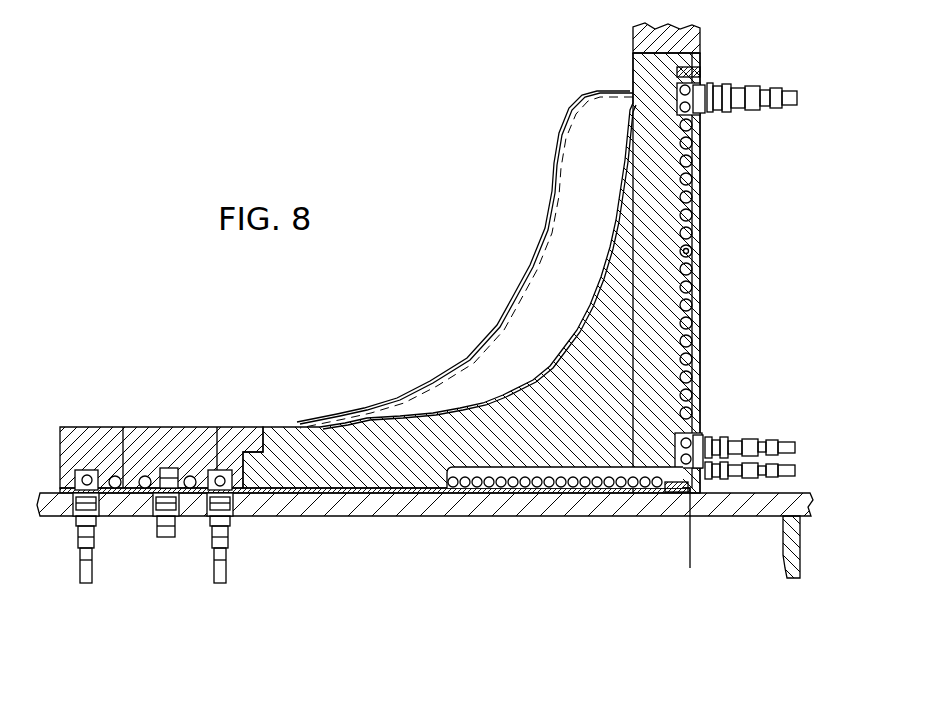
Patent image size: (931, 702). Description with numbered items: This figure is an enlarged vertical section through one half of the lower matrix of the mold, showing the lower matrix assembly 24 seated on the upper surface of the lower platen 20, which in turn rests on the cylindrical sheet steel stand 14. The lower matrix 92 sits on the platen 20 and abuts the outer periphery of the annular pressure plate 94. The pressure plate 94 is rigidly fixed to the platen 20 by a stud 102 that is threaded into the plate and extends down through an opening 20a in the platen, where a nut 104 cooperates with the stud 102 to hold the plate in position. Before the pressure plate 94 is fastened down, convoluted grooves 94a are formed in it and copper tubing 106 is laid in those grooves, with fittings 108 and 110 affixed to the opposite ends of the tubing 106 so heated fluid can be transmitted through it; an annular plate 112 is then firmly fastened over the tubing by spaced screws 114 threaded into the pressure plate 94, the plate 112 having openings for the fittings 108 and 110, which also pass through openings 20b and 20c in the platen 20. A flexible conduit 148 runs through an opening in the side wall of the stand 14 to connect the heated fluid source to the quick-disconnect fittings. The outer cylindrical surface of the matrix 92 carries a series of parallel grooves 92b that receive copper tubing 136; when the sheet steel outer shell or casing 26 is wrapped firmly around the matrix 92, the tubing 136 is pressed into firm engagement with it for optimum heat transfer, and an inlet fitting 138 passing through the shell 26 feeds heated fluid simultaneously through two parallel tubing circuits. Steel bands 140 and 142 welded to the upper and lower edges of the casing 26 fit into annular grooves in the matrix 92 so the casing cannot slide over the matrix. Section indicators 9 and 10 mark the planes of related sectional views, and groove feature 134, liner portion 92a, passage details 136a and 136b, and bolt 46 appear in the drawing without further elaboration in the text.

The section line 9- 9 is at (706, 379).
The section line 10- 10 is at (512, 492).
The stand 14 is at (782, 574).
The platen 20 is at (395, 507).
The opening 20a is at (160, 510).
The opening 20b is at (70, 488).
The opening 20c is at (247, 520).
The lower matrix assembly 24 is at (713, 168).
The outer shell or casing 26 is at (690, 214).
The bolt 46 is at (82, 582).
The lower matrix 92 is at (692, 304).
The liner 92a is at (593, 164).
The parallel grooves 92b is at (690, 248).
The annular pressure plate 94 is at (172, 470).
The convoluted grooves 94a is at (117, 475).
The stud 102 is at (183, 513).
The nut 104 is at (165, 538).
The copper tubing 106 is at (145, 475).
The fitting 108 is at (80, 519).
The fitting 110 is at (230, 519).
The annular plate 112 is at (215, 468).
The screws 114 is at (192, 475).
The coolant groove 134 is at (542, 490).
The copper tubing 136 is at (689, 268).
The inlet passage 136a is at (688, 86).
The outlet passage 136b is at (691, 108).
The inlet fitting 138 is at (745, 90).
The steel band 140 is at (690, 53).
The steel band 142 is at (673, 497).
The flexible conduit 148 is at (227, 583).